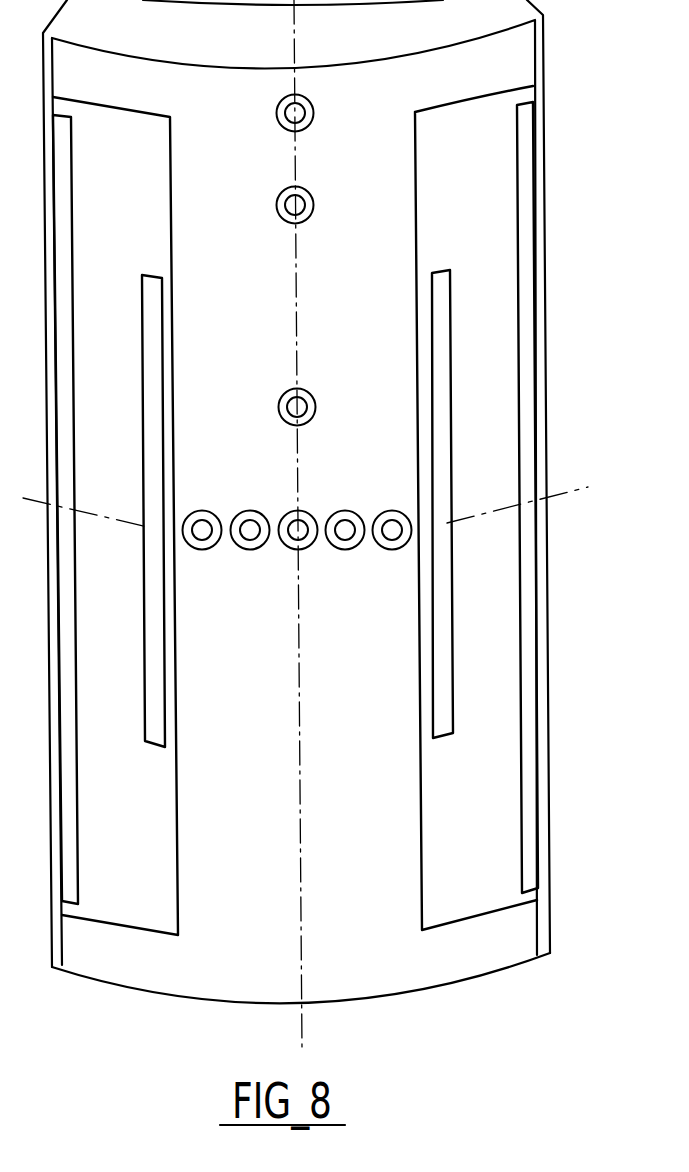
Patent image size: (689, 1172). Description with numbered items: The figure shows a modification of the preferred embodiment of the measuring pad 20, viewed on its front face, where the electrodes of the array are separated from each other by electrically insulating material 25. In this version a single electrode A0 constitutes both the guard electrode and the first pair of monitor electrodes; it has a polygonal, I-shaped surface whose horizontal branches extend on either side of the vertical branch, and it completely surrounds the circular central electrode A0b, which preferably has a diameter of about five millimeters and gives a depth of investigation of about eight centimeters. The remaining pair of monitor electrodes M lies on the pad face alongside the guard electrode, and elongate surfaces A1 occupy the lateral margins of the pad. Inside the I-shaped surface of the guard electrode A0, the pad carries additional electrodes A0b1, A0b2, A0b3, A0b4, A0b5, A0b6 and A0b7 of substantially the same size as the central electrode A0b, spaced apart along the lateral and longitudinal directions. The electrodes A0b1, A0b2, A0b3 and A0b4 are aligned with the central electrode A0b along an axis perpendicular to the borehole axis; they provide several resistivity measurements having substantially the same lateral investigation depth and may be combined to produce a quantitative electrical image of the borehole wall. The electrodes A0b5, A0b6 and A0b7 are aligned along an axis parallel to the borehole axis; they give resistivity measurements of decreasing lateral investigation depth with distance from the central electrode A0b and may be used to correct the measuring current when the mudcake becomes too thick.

The detector block body 20 is at (553, 79).
The electrically insulating material 25 is at (137, 220).
The monitor electrodes M is at (153, 583).
The outer slot A1 is at (72, 857).
The guard electrode A0 is at (305, 524).
The central electrode A0b is at (302, 540).
The additional electrode A0b1 is at (342, 520).
The additional electrode A0b2 is at (390, 540).
The additional electrode A0b3 is at (247, 520).
The additional electrode A0b4 is at (202, 540).
The additional electrode A0b5 is at (310, 112).
The additional electrode A0b6 is at (310, 197).
The additional electrode A0b7 is at (305, 406).